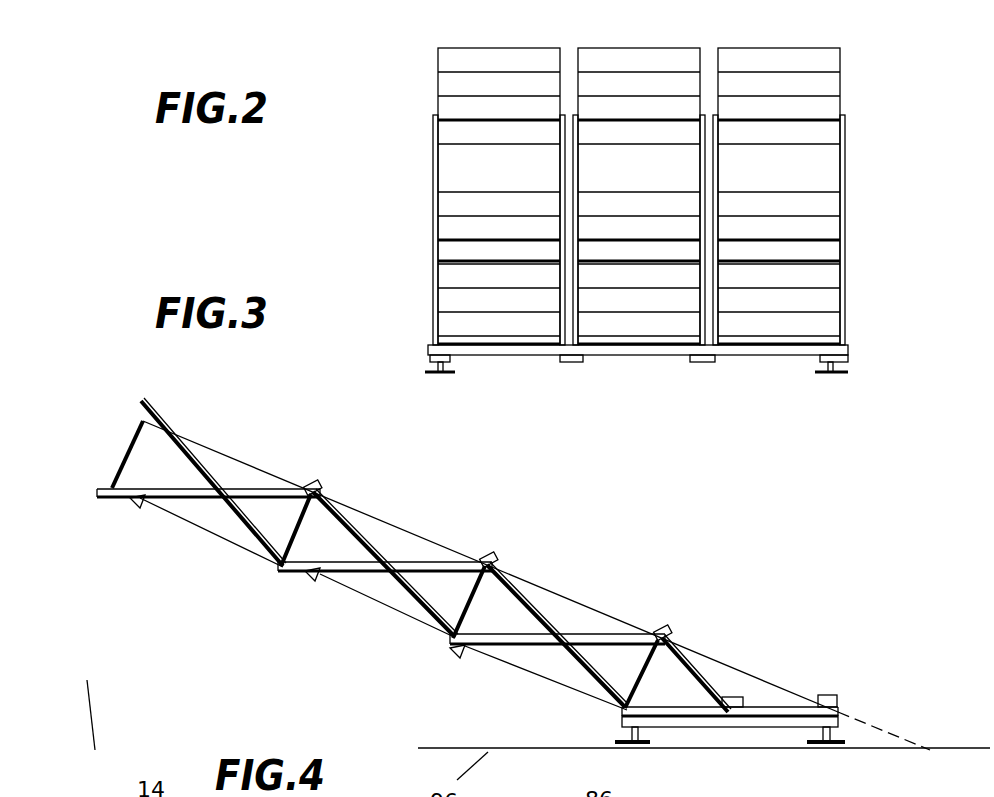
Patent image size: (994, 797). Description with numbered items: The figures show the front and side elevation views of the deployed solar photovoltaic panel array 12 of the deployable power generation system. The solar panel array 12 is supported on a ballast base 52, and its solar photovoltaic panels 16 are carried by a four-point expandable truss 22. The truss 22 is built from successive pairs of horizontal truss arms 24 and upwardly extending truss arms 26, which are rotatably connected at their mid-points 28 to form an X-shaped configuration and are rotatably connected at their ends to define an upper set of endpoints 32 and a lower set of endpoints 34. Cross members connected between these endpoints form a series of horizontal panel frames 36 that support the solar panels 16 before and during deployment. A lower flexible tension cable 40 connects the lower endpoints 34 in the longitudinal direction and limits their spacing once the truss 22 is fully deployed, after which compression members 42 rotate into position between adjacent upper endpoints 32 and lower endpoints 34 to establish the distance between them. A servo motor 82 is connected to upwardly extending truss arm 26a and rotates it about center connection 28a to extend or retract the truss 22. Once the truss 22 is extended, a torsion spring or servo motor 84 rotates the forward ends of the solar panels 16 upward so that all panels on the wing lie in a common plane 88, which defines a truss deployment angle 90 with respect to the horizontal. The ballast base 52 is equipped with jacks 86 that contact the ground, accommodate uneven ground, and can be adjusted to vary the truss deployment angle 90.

In FIG. 3, the foldable solar panel array 12 is at (662, 515).
In FIG. 2, the solar photovoltaic panel 16 is at (495, 80).
In FIG. 3, the solar photovoltaic panel 16 is at (210, 449).
In FIG. 3, the four-point expandable truss 22 is at (97, 492).
In FIG. 3, the horizontal truss arm 24 is at (266, 473).
In FIG. 3, the upwardly extending truss arm 26 is at (230, 540).
In FIG. 3, the upwardly extending truss arm 26a is at (800, 706).
In FIG. 3, the mid-point 28 is at (550, 640).
In FIG. 3, the center connection 28a is at (728, 712).
In FIG. 3, the upper endpoint 32 is at (467, 602).
In FIG. 3, the lower endpoint 34 is at (281, 560).
In FIG. 3, the horizontal panel frame 36 is at (136, 503).
In FIG. 3, the lower flexible tension cable 40 is at (182, 522).
In FIG. 3, the compression member 42 is at (125, 460).
In FIG. 2, the ballast base 52 is at (640, 355).
In FIG. 3, the ballast base 52 is at (622, 720).
In FIG. 3, the servo motor 82 is at (742, 702).
In FIG. 3, the servo motor 84 is at (320, 488).
In FIG. 2, the jack 86 is at (445, 363).
In FIG. 3, the jack 86 is at (618, 747).
In FIG. 3, the common plane 88 is at (863, 720).
In FIG. 3, the truss deployment angle 90 is at (877, 740).